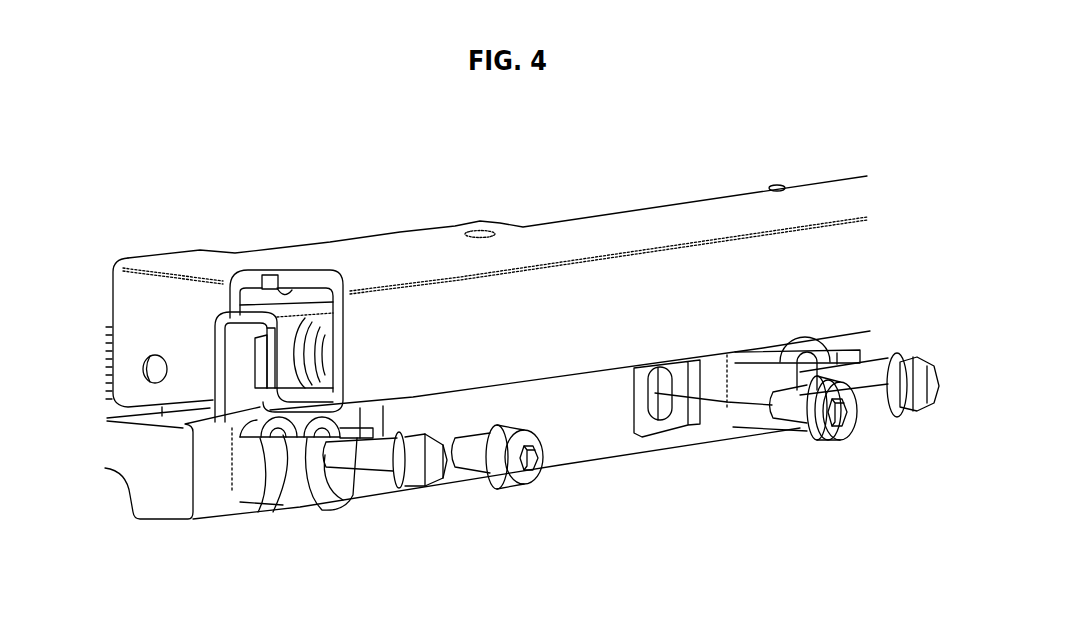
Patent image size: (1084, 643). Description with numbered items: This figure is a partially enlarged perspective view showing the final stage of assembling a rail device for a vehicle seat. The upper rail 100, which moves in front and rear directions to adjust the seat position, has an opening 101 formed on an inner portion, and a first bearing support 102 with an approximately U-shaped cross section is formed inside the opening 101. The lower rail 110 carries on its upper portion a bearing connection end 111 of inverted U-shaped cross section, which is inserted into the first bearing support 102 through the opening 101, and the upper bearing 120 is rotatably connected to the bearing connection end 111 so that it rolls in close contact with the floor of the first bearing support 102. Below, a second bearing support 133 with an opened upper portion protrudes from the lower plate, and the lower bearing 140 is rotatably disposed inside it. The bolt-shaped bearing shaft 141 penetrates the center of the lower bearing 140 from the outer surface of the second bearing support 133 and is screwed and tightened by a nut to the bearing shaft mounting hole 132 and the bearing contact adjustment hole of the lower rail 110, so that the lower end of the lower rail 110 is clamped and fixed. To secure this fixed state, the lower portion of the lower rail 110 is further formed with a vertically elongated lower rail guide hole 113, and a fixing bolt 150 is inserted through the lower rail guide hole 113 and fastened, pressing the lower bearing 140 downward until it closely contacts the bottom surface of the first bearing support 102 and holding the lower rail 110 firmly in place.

The upper rail 100 is at (428, 212).
The opening 101 is at (282, 292).
The first bearing support 102 is at (273, 497).
The lower rail 110 is at (200, 340).
The bearing connection end 111 is at (268, 357).
The lower rail guide hole 113 is at (668, 405).
The upper bearing 120 is at (312, 332).
The bearing shaft mounting hole 132 is at (190, 427).
The second bearing support 133 is at (337, 490).
The lower bearing 140 is at (293, 425).
The bearing shaft 141 is at (373, 455).
The fixing bolt 150 is at (528, 475).